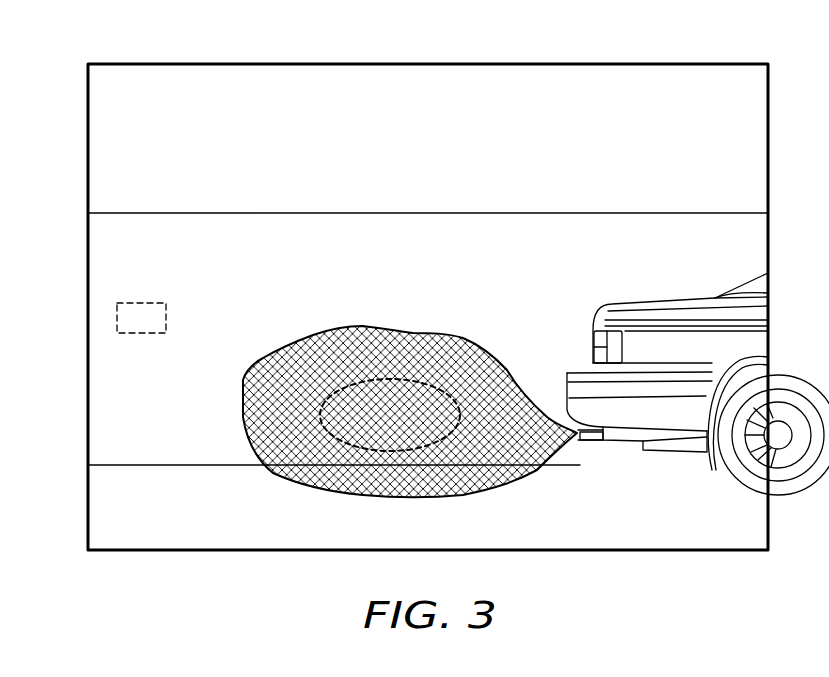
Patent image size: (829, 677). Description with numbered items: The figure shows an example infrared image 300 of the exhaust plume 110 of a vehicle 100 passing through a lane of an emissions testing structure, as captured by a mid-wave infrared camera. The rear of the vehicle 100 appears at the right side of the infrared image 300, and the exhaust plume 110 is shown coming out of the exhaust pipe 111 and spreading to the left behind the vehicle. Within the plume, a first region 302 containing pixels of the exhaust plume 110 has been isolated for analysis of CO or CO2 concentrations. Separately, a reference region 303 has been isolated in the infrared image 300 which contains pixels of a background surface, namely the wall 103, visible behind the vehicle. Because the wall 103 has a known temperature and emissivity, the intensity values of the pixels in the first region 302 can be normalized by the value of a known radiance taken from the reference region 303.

The infrared image 300 is at (443, 63).
The wall 103 is at (387, 213).
The reference region 303 is at (117, 316).
The exhaust plume 110 is at (448, 332).
The first region 302 is at (390, 378).
The vehicle 100 is at (657, 302).
The exhaust pipe 111 is at (593, 443).